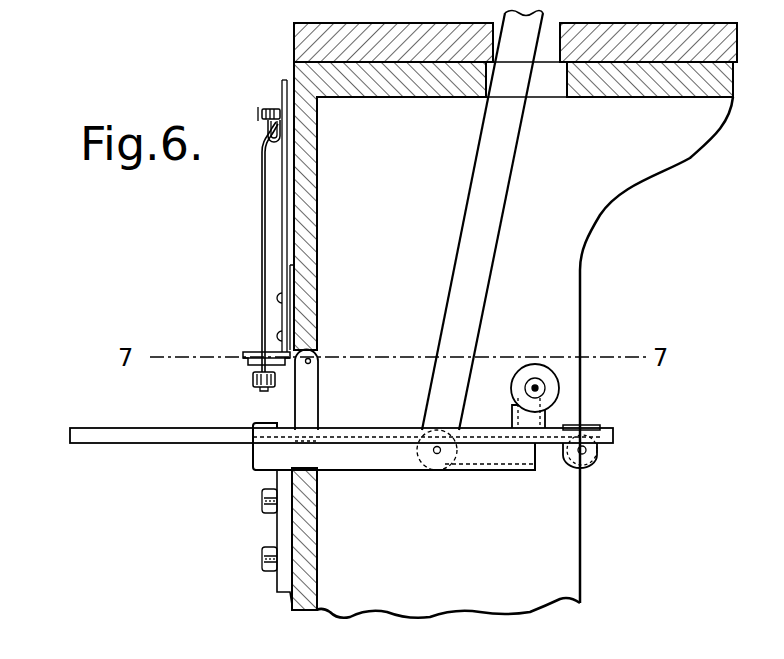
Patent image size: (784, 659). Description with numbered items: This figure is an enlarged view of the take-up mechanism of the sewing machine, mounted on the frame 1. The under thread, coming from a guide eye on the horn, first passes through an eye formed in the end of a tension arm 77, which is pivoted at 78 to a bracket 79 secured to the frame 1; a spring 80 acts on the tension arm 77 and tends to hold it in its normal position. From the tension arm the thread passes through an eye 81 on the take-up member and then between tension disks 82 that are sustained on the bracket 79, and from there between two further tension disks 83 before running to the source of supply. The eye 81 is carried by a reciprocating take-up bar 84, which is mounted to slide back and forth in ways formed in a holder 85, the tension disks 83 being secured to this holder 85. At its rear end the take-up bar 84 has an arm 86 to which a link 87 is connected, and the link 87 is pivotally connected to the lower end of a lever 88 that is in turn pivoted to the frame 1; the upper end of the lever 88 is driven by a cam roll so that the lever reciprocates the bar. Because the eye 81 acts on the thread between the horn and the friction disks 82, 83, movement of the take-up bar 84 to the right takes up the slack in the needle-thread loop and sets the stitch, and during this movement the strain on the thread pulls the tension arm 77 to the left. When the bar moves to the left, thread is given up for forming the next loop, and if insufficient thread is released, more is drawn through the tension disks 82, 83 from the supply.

The frame 1 is at (578, 512).
The tension arm 77 is at (262, 211).
The pivot 78 is at (261, 112).
The bracket 79 is at (283, 234).
The spring 80 is at (268, 139).
The eye 81 is at (316, 358).
The tension disks 82 is at (240, 362).
The tension disks 83 is at (532, 366).
The take-up bar 84 is at (221, 419).
The holder 85 is at (395, 462).
The arm 86 is at (600, 427).
The link 87 is at (557, 464).
The lever 88 is at (455, 285).